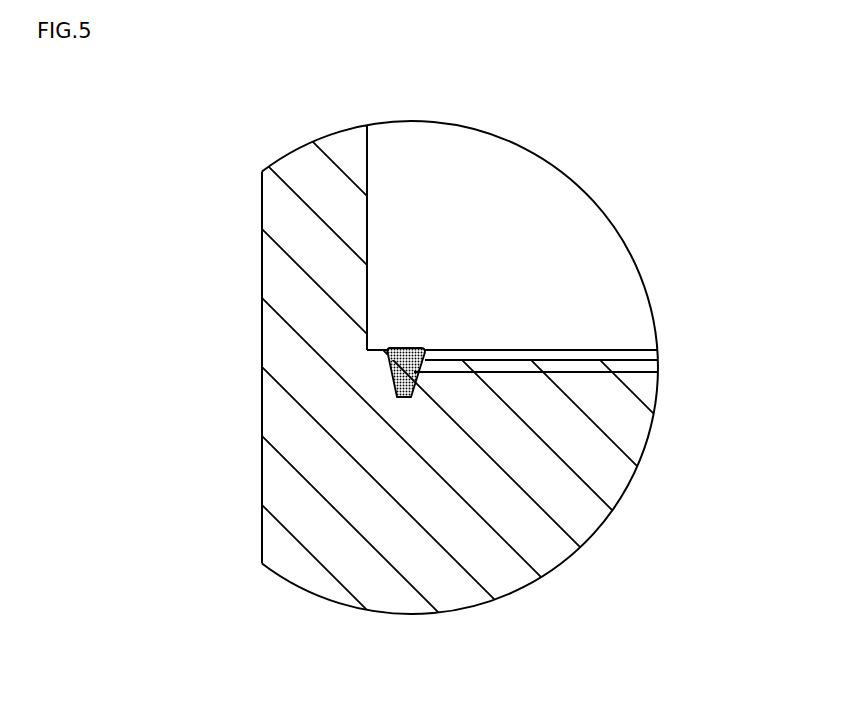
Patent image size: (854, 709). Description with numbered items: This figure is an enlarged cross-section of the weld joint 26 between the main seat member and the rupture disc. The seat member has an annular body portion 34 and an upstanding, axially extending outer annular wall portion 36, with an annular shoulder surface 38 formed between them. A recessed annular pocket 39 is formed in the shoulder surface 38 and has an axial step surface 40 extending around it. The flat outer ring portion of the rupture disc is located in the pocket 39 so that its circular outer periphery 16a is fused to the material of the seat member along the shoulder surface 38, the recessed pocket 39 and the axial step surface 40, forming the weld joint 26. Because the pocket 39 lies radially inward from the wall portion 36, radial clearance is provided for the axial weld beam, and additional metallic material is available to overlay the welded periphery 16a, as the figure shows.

The annular body portion 34 is at (508, 573).
The outer annular wall portion 36 is at (292, 283).
The weld joint 26 is at (418, 320).
The annular shoulder surface 38 is at (372, 349).
The axial step surface 40 is at (426, 346).
The circular outer periphery of the ring portion 16a is at (430, 348).
The recessed annular pocket 39 is at (649, 352).